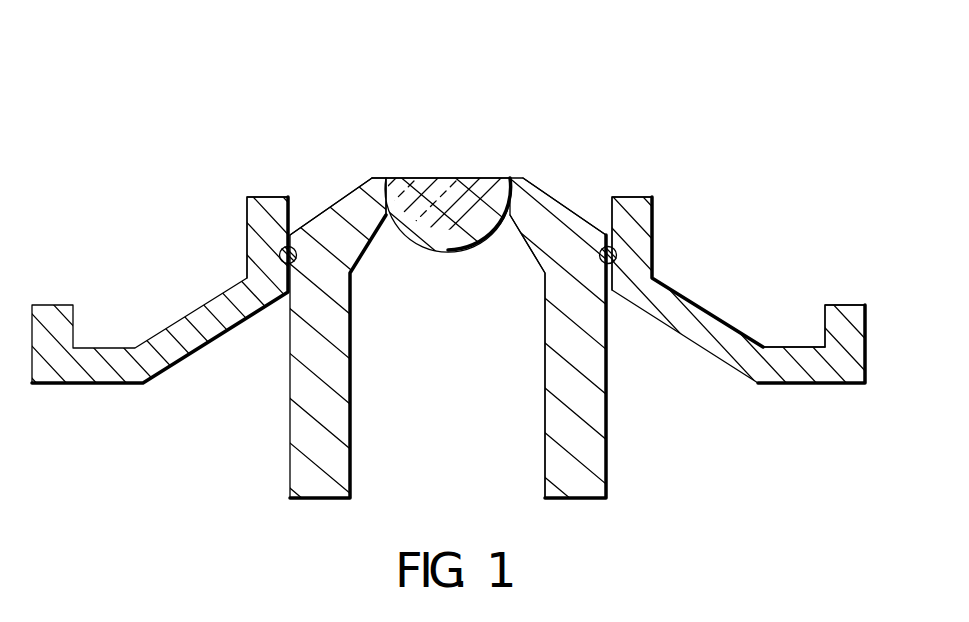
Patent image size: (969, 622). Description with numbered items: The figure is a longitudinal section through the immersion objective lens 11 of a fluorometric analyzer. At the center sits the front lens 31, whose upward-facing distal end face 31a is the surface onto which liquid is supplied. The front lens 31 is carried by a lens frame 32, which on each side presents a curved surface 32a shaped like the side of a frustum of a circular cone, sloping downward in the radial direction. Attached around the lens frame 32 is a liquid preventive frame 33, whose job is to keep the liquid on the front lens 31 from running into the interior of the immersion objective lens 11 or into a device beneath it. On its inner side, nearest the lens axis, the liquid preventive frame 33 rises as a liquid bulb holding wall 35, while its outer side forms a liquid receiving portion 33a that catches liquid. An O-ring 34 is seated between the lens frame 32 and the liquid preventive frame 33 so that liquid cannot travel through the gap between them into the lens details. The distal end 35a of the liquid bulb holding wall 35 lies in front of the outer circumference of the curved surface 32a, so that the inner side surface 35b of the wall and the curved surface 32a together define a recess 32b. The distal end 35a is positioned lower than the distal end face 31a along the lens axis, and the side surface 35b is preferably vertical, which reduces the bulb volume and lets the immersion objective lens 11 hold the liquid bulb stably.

The immersion objective lens 11 is at (455, 83).
The front lens 31 is at (478, 185).
The distal end face 31a is at (388, 178).
The lens frame 32 is at (606, 450).
The curved surface 32a is at (562, 203).
The recess 32b is at (597, 205).
The liquid preventive frame 33 is at (867, 342).
The liquid receiving portion 33a is at (776, 323).
The O-ring 34 is at (280, 265).
The liquid bulb holding wall 35 is at (654, 218).
The distal end 35a is at (260, 196).
The side surface 35b is at (294, 210).